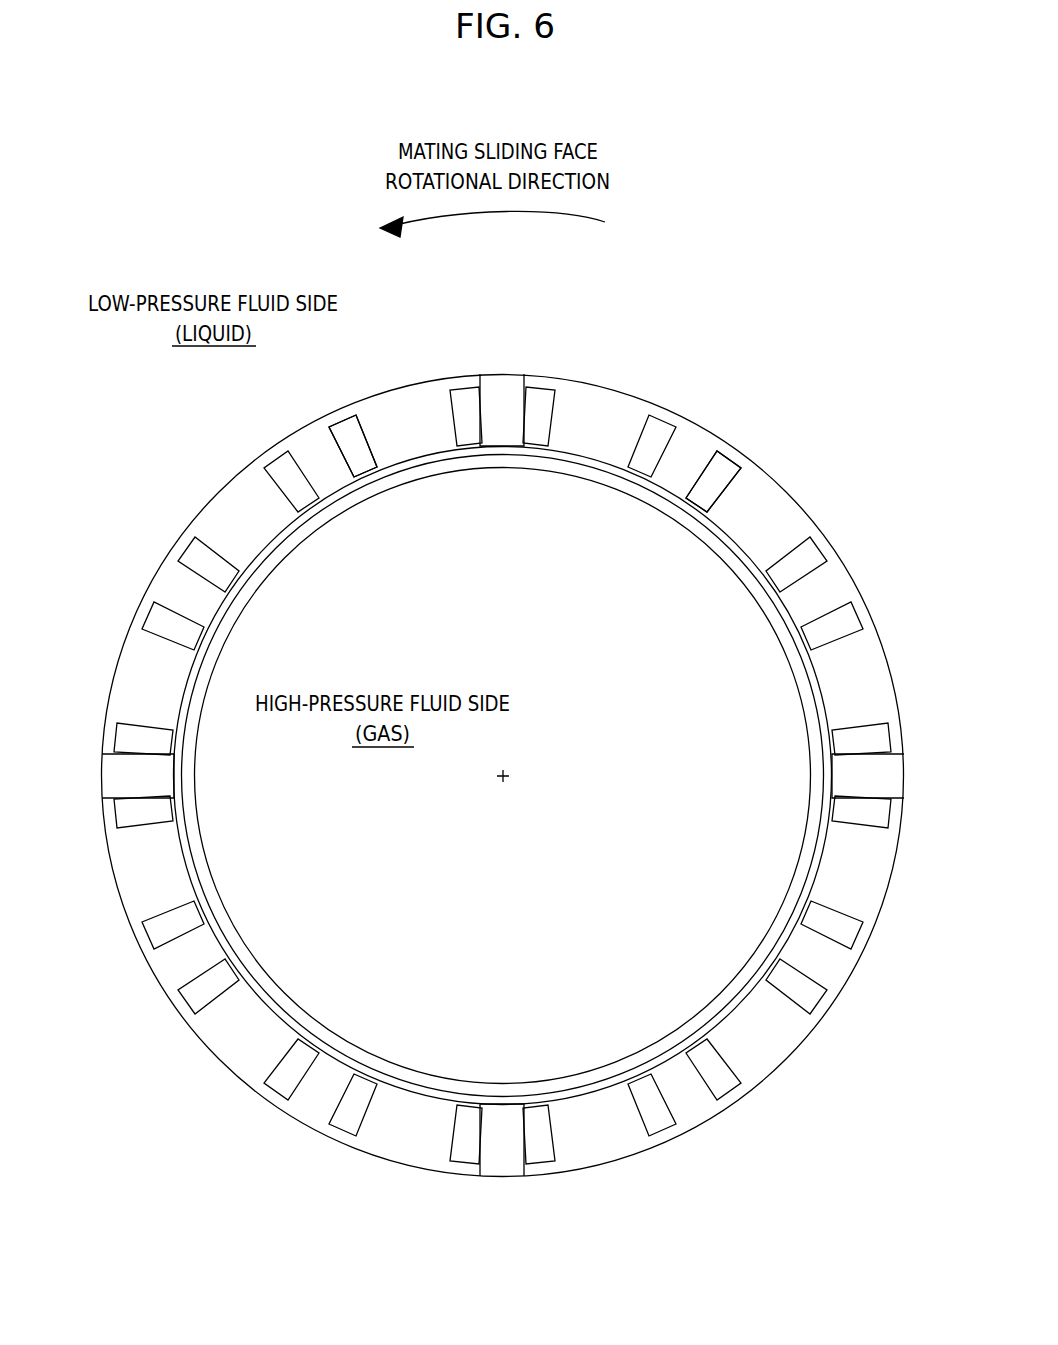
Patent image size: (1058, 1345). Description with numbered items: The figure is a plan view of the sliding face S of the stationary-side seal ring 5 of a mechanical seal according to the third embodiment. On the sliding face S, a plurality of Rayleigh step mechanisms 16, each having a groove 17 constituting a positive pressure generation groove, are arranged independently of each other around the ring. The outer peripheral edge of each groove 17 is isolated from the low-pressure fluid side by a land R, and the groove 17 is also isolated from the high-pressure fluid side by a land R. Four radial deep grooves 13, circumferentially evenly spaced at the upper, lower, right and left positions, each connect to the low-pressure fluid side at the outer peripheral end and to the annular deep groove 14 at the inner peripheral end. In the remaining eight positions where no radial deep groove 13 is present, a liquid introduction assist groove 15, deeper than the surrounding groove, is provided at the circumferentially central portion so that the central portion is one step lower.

The stationary-side seal ring 5 is at (782, 485).
The radial deep groove 13 is at (513, 397).
The annular deep groove 14 is at (560, 458).
The liquid introduction assist groove 15 is at (320, 425).
The Rayleigh step mechanism 16 is at (470, 383).
The groove 17 is at (462, 402).
The sliding face S is at (588, 412).
The land R is at (395, 408).